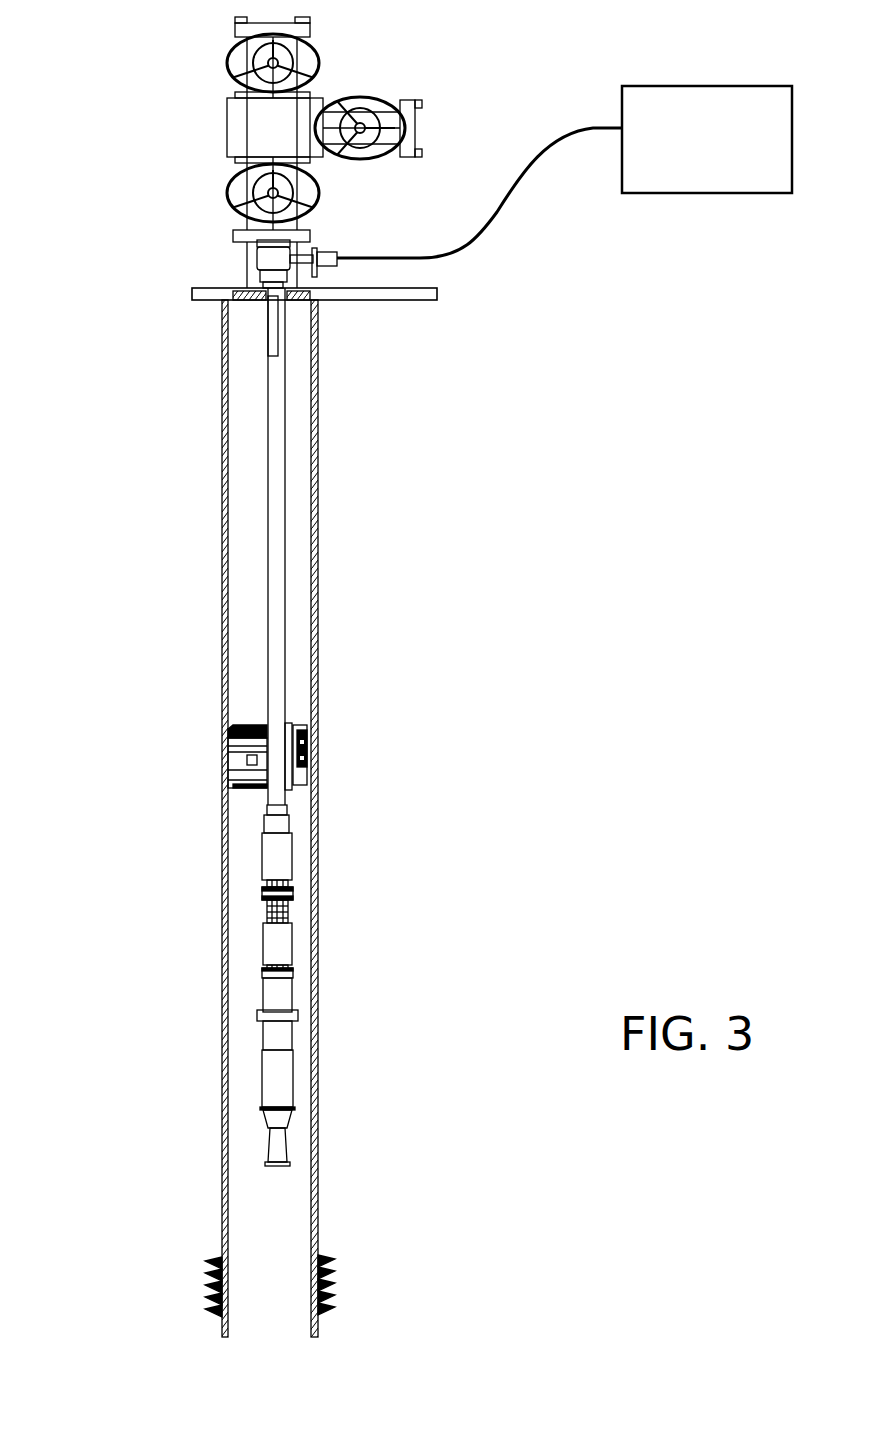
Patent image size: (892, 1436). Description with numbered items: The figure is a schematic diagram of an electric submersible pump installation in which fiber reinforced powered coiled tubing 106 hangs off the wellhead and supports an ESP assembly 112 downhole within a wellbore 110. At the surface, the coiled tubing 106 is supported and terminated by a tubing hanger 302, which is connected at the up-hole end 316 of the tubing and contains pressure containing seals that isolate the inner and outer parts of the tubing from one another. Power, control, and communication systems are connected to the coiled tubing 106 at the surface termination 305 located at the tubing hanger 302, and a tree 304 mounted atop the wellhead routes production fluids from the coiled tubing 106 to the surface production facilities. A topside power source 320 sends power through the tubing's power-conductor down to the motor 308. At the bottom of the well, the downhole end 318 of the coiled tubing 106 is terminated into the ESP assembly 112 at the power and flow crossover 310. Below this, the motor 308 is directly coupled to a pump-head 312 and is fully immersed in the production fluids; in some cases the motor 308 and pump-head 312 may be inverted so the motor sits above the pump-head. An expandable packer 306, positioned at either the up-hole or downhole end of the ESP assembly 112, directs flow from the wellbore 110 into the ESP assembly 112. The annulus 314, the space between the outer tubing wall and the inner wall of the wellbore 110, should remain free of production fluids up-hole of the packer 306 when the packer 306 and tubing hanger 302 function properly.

The fiber reinforced powered coiled tubing 106 is at (278, 523).
The wellbore 110 is at (300, 1234).
The ESP assembly 112 is at (236, 919).
The tubing hanger 302 is at (257, 262).
The tree 304 is at (257, 132).
The surface termination 305 is at (333, 252).
The expandable packer 306 is at (317, 758).
The motor 308 is at (296, 1068).
The power and flow crossover 310 is at (290, 826).
The pump-head 312 is at (290, 884).
The annulus 314 is at (243, 473).
The up-hole end 316 is at (322, 300).
The downhole end 318 is at (257, 805).
The topside power source 320 is at (658, 85).